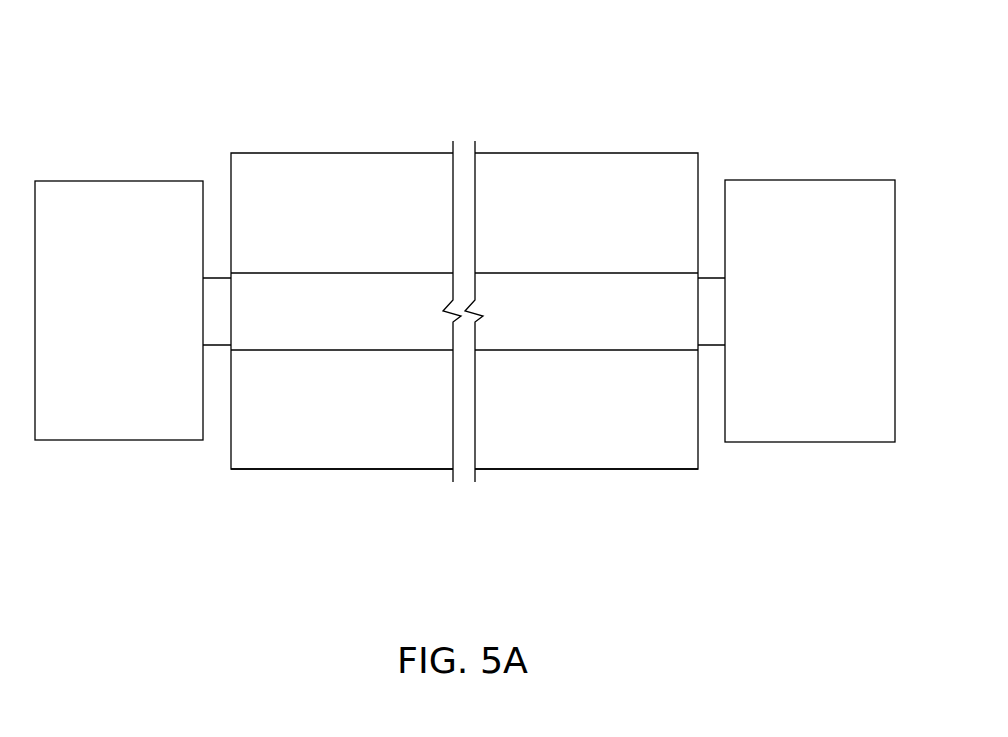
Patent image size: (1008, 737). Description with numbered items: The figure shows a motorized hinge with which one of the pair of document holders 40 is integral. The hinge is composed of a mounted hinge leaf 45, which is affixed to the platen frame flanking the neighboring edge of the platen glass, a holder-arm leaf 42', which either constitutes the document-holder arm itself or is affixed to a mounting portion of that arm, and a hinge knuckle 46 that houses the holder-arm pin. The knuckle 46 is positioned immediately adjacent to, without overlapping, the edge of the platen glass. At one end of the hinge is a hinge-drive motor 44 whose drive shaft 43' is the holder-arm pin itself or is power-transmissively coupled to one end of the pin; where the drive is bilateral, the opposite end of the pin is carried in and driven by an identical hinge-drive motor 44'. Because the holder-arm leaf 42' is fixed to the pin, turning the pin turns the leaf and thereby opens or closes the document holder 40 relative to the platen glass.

The document holder 40 is at (123, 40).
The holder-arm leaf 42' is at (586, 287).
The drive shaft 43' is at (712, 411).
The hinge-drive motor 44 is at (810, 287).
The hinge-drive motor 44' is at (119, 286).
The mounted hinge leaf 45 is at (383, 452).
The hinge knuckle 46 is at (285, 300).